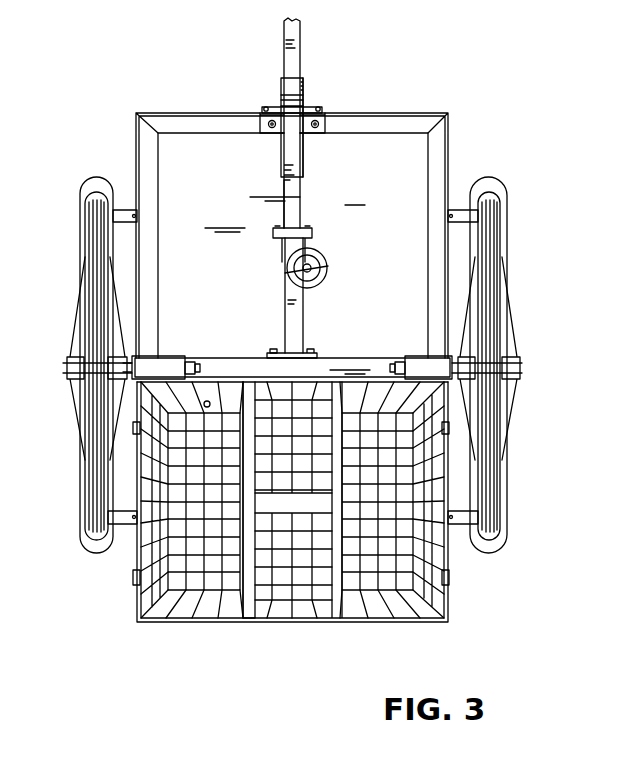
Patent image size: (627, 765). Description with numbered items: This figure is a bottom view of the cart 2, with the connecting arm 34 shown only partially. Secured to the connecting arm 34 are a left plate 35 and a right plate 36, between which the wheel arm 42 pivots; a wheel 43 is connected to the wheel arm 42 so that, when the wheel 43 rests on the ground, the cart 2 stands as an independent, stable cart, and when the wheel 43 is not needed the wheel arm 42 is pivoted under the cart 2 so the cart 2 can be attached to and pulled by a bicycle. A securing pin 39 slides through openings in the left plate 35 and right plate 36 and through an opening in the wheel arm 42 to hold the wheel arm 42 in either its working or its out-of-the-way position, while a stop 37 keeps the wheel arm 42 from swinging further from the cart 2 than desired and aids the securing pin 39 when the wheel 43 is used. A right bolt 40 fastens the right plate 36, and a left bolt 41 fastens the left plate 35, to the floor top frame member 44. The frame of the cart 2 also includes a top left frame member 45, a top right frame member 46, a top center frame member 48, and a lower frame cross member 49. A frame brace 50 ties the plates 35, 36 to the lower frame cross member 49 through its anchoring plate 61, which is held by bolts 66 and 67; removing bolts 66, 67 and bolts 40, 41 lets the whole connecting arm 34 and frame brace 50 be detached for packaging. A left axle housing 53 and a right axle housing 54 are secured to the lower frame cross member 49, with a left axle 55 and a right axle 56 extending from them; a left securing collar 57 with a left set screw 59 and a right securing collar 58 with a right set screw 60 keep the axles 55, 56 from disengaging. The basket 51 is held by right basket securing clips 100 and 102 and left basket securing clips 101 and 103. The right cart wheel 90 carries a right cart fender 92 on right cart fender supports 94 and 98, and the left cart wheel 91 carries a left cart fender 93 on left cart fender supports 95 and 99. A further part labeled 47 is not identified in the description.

The cart 2 is at (104, 649).
The connecting arm 34 is at (302, 37).
The left plate 35 is at (303, 80).
The right plate 36 is at (282, 100).
The stop 37 is at (287, 92).
The securing pin 39 is at (270, 108).
The right bolt 40 is at (272, 130).
The left bolt 41 is at (315, 130).
The wheel arm 42 is at (283, 205).
The wheel 43 is at (318, 258).
The floor top frame member 44 is at (398, 136).
The top left frame member 45 is at (428, 280).
The top right frame member 46 is at (158, 275).
The basket bottom right panel 47 is at (385, 597).
The top center frame member 48 is at (208, 401).
The lower frame cross member 49 is at (228, 357).
The frame brace 50 is at (304, 318).
The basket 51 is at (220, 610).
The left axle housing 53 is at (423, 358).
The right axle housing 54 is at (165, 358).
The left axle 55 is at (397, 367).
The right axle 56 is at (200, 358).
The left securing collar 57 is at (397, 363).
The right securing collar 58 is at (193, 360).
The left set screw 59 is at (462, 362).
The right set screw 60 is at (138, 386).
The anchoring plate 61 is at (268, 355).
The bolt 66 is at (272, 352).
The bolt 67 is at (310, 352).
The right cart wheel 90 is at (85, 237).
The left cart wheel 91 is at (507, 200).
The right cart fender 92 is at (80, 197).
The left cart fender 93 is at (478, 195).
The right cart fender support 94 is at (123, 208).
The left cart fender support 95 is at (463, 209).
The right cart fender support 98 is at (124, 523).
The left cart fender support 99 is at (462, 524).
The right basket securing clip 100 is at (134, 430).
The left basket securing clip 101 is at (448, 430).
The right basket securing clip 102 is at (134, 582).
The left basket securing clip 103 is at (449, 584).